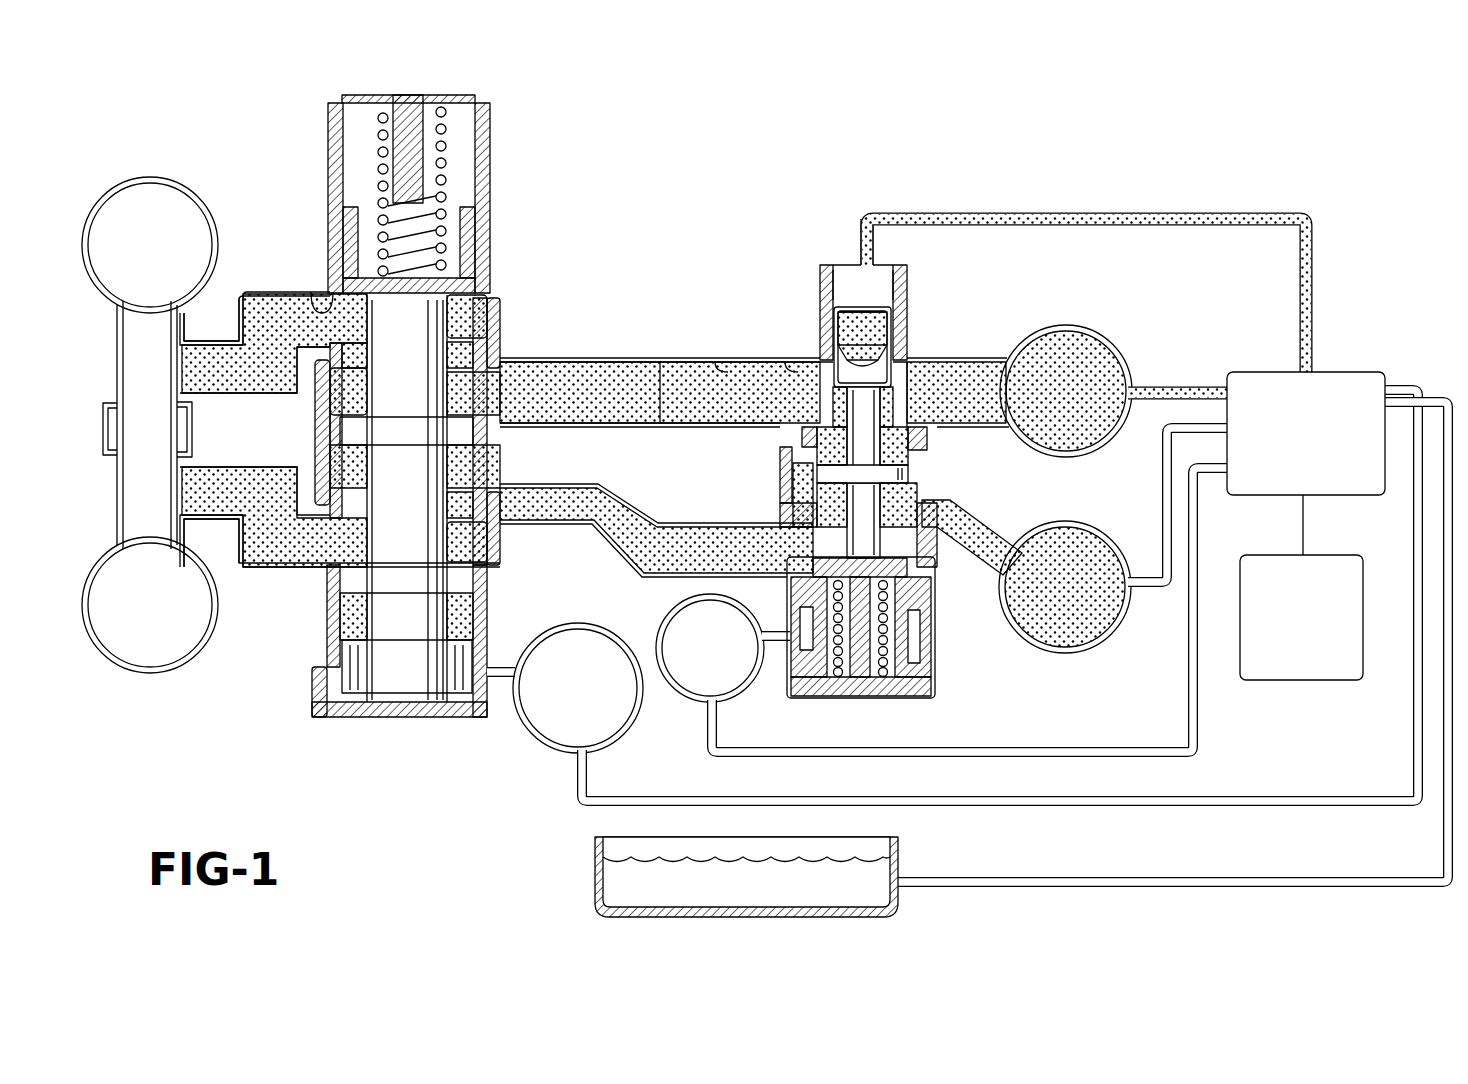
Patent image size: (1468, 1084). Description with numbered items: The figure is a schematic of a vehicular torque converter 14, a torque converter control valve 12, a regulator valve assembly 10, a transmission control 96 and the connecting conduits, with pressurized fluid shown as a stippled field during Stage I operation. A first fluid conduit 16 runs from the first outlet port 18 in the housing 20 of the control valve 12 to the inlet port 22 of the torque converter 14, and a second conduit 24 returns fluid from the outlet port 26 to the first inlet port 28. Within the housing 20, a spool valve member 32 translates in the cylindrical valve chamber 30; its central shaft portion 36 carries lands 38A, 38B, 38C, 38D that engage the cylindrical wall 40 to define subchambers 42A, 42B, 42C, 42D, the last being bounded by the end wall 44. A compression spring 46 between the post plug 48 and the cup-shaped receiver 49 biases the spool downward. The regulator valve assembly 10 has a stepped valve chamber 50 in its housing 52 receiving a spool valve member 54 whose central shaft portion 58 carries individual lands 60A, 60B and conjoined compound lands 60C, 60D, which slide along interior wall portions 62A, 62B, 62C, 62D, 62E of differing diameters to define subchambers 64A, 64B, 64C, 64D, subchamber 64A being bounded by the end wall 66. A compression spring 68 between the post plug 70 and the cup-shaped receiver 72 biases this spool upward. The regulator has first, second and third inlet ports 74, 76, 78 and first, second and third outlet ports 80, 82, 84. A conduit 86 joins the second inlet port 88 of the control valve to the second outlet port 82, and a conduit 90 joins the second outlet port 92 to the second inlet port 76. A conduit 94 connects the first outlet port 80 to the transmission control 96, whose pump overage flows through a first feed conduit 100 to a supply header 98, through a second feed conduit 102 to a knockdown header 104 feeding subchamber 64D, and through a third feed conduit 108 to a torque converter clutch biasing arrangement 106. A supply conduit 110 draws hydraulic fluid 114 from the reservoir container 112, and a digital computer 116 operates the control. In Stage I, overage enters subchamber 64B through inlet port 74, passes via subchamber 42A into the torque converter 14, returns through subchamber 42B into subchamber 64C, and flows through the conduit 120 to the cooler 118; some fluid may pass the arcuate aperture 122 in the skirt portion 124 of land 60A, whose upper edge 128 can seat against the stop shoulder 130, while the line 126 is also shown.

The regulator valve assembly 10 is at (803, 160).
The torque converter control valve 12 is at (533, 94).
The torque converter 14 is at (150, 176).
The first fluid conduit 16 is at (272, 292).
The first outlet port 18 is at (313, 300).
The housing 20 is at (503, 190).
The inlet port 22 is at (178, 362).
The second conduit 24 is at (272, 570).
The outlet port 26 is at (178, 492).
The first inlet port 28 is at (328, 535).
The valve chamber 30 is at (351, 496).
The spool valve member 32 is at (446, 308).
The central shaft portion 36 is at (385, 390).
The land 38A is at (467, 258).
The land 38B is at (468, 425).
The land 38C is at (458, 583).
The land 38D is at (415, 672).
The cylindrical wall 40 is at (470, 618).
The subchamber 42A is at (466, 325).
The subchamber 42B is at (463, 544).
The subchamber 42C is at (345, 620).
The subchamber 42D is at (405, 727).
The end wall 44 is at (345, 718).
The compression spring 46 is at (437, 182).
The post plug 48 is at (405, 105).
The cup-shaped receiver 49 is at (448, 245).
The stepped valve chamber 50 is at (886, 327).
The housing 52 is at (810, 268).
The spool valve member 54 is at (818, 385).
The central shaft portion 58 is at (870, 498).
The land 60A is at (716, 360).
The land 60B is at (822, 475).
The land 60C is at (915, 568).
The land 60D is at (932, 665).
The cylindrical wall portion 62A is at (895, 302).
The cylindrical wall portion 62B is at (892, 425).
The wall portion 62C is at (905, 532).
The wall portion 62D is at (912, 634).
The wall portion 62E is at (815, 680).
The subchamber 64A is at (877, 297).
The subchamber 64B is at (910, 366).
The subchamber 64C is at (830, 522).
The subchamber 64D is at (924, 650).
The end wall 66 is at (880, 286).
The compression spring 68 is at (880, 652).
The post plug 70 is at (860, 690).
The cup-shaped receiver 72 is at (910, 672).
The first inlet port 74 is at (787, 360).
The second inlet port 76 is at (760, 572).
The third inlet port 78 is at (762, 640).
The first outlet port 80 is at (845, 265).
The second outlet port 82 is at (830, 418).
The third outlet port 84 is at (905, 458).
The conduit 86 is at (665, 357).
The second inlet port 88 is at (505, 392).
The conduit 90 is at (583, 530).
The second outlet port 92 is at (478, 468).
The conduit 94 is at (995, 212).
The transmission control 96 is at (1290, 449).
The supply header 98 is at (1070, 340).
The first feed conduit 100 is at (1177, 388).
The second feed conduit 102 is at (1197, 742).
The knockdown header 104 is at (698, 665).
The torque converter clutch biasing arrangement 106 is at (575, 718).
The third feed conduit 108 is at (1105, 806).
The supply conduit 110 is at (1250, 887).
The reservoir container 112 is at (898, 870).
The hydraulic fluid 114 is at (640, 865).
The digital computer 116 is at (1283, 636).
The cooler 118 is at (1100, 610).
The conduit 120 is at (950, 480).
The arcuate aperture 122 is at (843, 330).
The skirt portion 124 is at (858, 347).
The control line 126 is at (1162, 470).
The upper edge 128 is at (850, 293).
The stop shoulder 130 is at (850, 305).